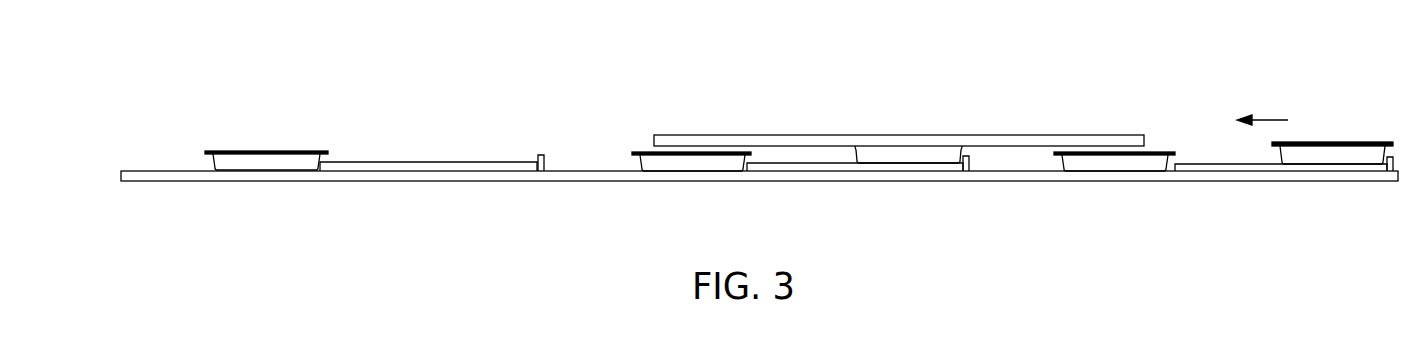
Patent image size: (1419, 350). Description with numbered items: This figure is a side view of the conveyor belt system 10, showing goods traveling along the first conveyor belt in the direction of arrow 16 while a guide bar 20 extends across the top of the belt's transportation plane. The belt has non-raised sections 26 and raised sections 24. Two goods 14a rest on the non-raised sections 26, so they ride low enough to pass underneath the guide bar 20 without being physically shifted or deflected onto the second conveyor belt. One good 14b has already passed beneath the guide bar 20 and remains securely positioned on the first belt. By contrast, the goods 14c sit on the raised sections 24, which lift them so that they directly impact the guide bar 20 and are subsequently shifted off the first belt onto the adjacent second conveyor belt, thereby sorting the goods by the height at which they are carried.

The conveyor belt system 10 is at (348, 90).
The goods on non-raised sections 14a is at (692, 165).
The good that has passed the guide bar 14b is at (261, 163).
The goods on raised sections 14c is at (907, 155).
The direction arrow 16 is at (1270, 118).
The guide bar 20 is at (1020, 141).
The raised sections 24 is at (461, 165).
The non-raised sections 26 is at (163, 170).